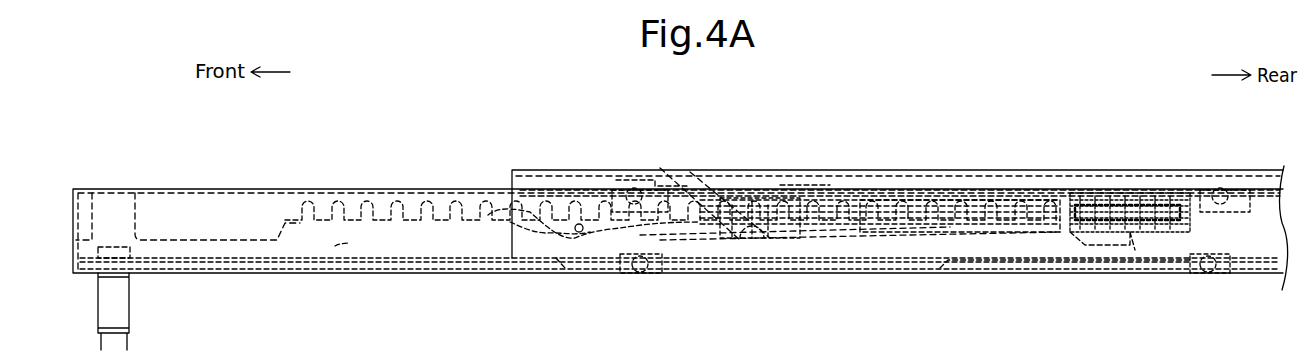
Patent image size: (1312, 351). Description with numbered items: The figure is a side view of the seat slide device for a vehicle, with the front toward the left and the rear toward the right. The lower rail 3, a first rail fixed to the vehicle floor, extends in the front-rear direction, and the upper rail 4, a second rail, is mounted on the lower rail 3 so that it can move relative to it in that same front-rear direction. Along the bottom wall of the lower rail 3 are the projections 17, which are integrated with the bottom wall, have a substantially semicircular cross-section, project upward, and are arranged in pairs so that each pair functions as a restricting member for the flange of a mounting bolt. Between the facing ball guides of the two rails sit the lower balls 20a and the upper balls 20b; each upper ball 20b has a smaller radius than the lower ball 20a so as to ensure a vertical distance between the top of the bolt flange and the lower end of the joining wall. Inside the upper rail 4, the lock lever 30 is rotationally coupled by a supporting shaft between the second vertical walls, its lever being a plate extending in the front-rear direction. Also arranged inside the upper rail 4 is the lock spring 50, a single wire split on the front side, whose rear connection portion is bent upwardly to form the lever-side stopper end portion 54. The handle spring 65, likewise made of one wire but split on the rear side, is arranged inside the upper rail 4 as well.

The lower rail 3 is at (281, 273).
The upper rail 4 is at (533, 170).
The projection 17 is at (345, 251).
The lower ball 20a is at (652, 273).
The upper ball 20b is at (656, 196).
The lock lever 30 is at (857, 262).
The lock spring 50 is at (733, 265).
The lever-side stopper end portion 54 is at (1130, 262).
The handle spring 65 is at (583, 270).